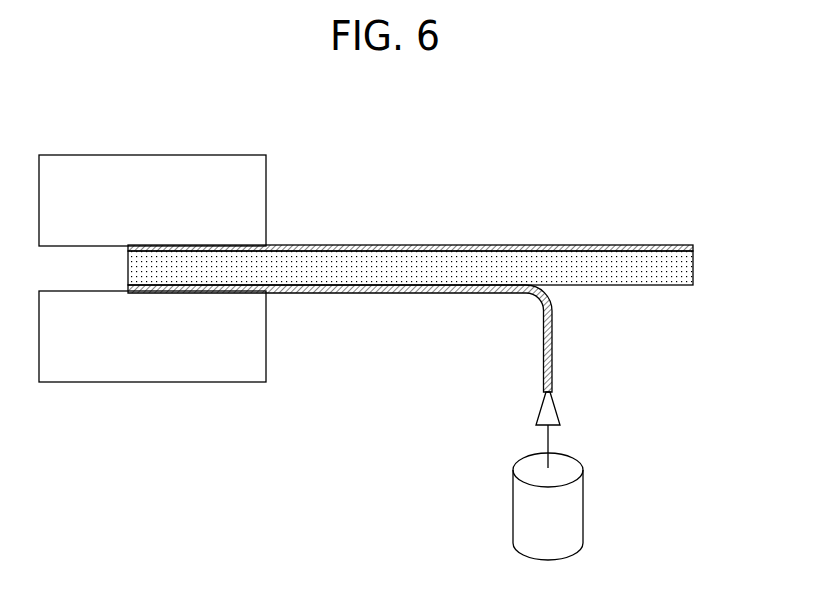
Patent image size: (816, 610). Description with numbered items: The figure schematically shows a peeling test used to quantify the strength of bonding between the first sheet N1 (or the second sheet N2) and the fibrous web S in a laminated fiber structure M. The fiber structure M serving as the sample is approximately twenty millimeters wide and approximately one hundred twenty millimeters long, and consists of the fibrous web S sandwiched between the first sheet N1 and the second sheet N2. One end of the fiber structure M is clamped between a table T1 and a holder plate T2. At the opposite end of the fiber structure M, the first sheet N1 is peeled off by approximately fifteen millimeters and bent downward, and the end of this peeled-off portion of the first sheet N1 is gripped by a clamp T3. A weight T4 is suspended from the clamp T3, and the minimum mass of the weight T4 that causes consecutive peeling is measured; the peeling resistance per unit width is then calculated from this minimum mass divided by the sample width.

The table T1 is at (153, 382).
The holder plate T2 is at (150, 155).
The fiber structure M is at (442, 263).
The fibrous web S is at (693, 270).
The first sheet N1 is at (552, 352).
The second sheet N2 is at (598, 245).
The clamp T3 is at (552, 405).
The weight T4 is at (583, 505).